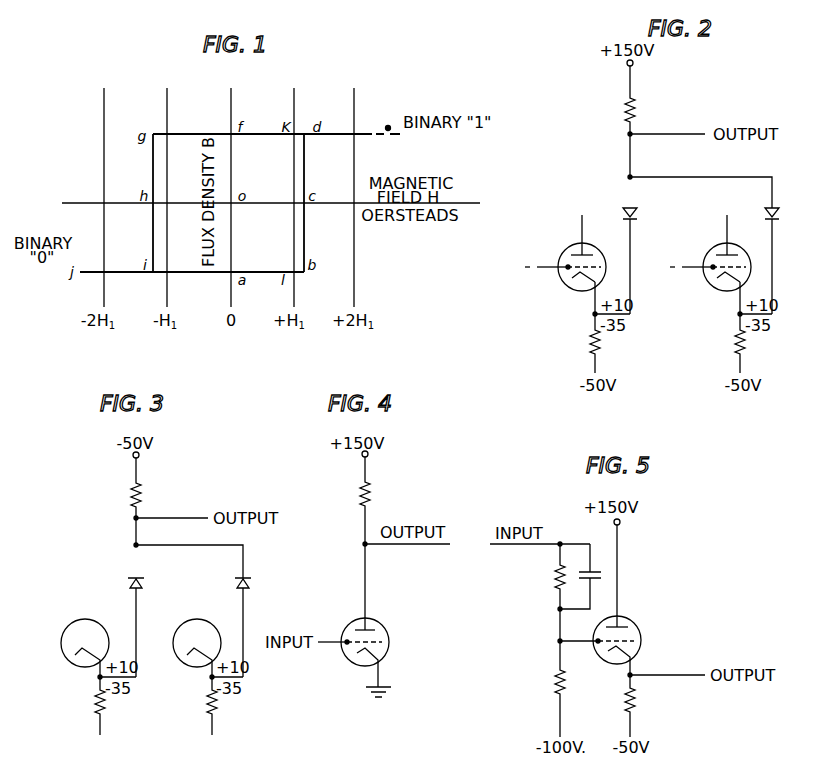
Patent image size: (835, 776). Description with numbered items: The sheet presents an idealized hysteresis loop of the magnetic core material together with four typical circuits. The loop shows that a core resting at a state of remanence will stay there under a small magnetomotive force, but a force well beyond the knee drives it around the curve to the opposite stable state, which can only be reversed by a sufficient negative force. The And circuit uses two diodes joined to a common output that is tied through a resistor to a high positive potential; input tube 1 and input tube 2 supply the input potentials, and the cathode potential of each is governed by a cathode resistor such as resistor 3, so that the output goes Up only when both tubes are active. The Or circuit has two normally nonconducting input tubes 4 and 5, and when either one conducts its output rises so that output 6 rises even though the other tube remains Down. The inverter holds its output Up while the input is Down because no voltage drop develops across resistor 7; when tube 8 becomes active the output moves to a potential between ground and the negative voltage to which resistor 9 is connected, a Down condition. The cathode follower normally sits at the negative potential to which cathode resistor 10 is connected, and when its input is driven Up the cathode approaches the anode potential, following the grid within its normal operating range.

In FIG. 2, the input tube 1 is at (568, 247).
In FIG. 2, the input tube 2 is at (716, 247).
In FIG. 2, the cathode resistor 3 is at (588, 341).
In FIG. 3, the input tube 4 is at (88, 622).
In FIG. 3, the input tube 5 is at (197, 622).
In FIG. 3, the output 6 is at (172, 518).
In FIG. 4, the resistor 7 is at (372, 494).
In FIG. 4, the tube 8 is at (350, 625).
In FIG. 5, the resistor 9 is at (552, 676).
In FIG. 5, the cathode resistor 10 is at (638, 703).